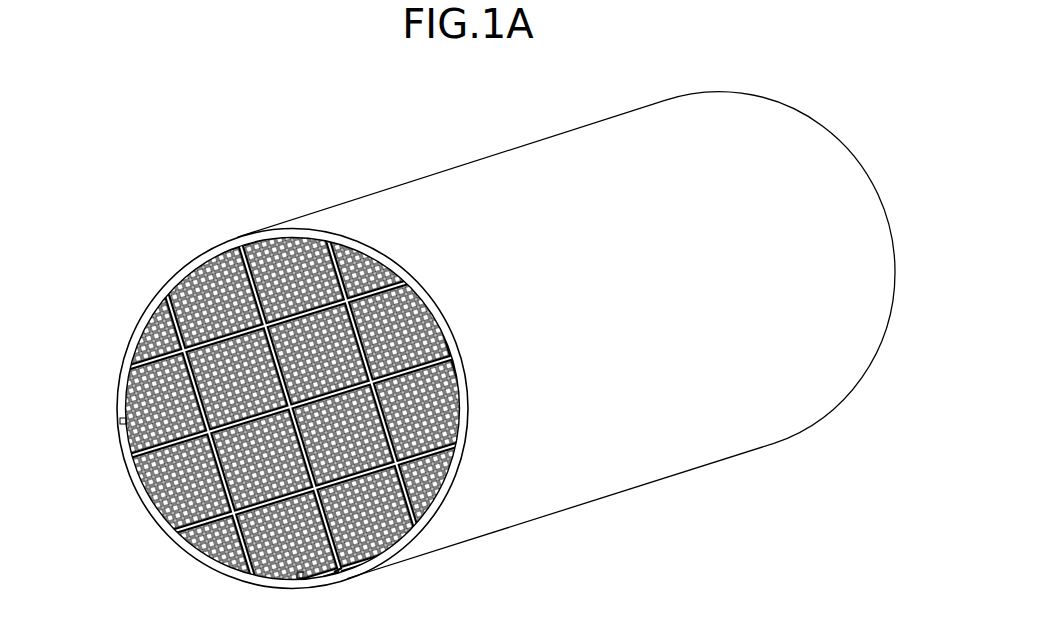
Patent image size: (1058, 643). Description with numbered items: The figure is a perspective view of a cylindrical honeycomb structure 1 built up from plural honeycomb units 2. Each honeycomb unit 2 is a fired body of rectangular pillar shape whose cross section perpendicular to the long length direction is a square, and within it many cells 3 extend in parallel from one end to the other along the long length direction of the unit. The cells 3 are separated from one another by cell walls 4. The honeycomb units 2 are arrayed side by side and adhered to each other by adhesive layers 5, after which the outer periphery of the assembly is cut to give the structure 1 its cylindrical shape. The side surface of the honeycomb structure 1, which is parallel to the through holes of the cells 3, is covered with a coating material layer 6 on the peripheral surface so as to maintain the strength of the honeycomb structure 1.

The honeycomb structure 1 is at (470, 345).
The honeycomb unit 2 is at (123, 423).
The cell 3 is at (300, 578).
The cell wall 4 is at (338, 570).
The adhesive layer 5 is at (420, 513).
The coating material layer 6 is at (161, 292).